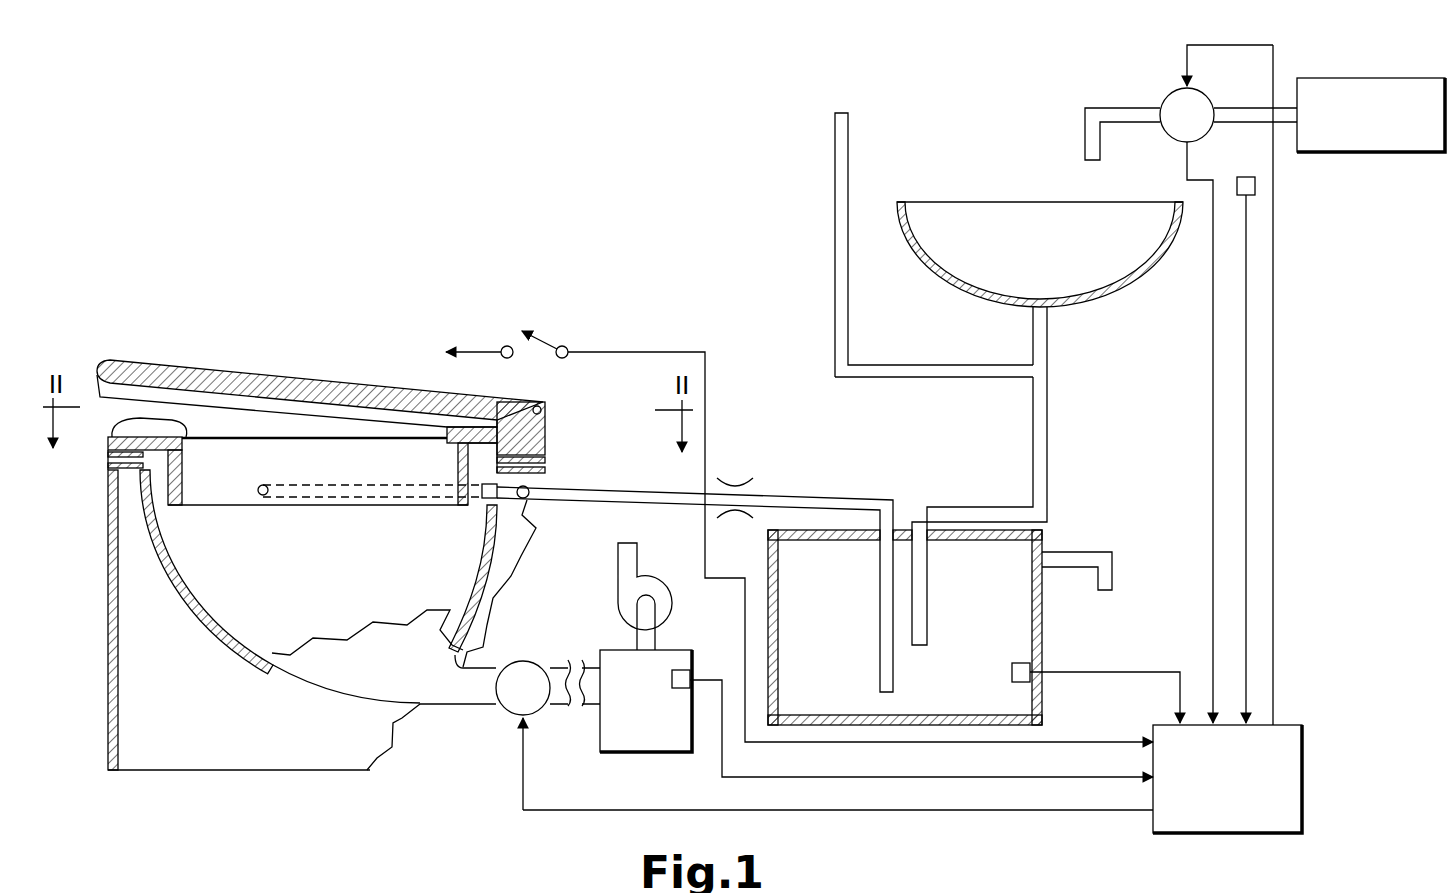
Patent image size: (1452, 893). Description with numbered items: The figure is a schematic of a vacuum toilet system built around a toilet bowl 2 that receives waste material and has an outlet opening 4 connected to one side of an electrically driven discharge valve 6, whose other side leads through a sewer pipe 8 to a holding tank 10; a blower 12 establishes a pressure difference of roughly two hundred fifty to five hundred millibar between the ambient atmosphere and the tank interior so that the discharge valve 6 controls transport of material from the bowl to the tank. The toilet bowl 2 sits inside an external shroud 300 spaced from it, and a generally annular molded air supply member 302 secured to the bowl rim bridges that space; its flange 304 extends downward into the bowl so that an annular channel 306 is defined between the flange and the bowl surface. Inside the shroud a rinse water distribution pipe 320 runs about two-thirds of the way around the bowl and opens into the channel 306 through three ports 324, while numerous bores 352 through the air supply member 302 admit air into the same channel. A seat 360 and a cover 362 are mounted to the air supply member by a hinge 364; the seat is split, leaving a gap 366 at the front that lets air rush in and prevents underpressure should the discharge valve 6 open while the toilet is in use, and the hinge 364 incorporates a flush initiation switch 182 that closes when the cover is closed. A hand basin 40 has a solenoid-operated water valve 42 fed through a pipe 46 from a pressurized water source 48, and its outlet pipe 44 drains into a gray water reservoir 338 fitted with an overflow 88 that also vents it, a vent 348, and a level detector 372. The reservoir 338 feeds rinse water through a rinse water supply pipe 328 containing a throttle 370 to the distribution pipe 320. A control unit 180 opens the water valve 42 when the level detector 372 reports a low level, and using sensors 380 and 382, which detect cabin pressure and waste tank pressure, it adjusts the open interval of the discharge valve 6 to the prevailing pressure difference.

The toilet bowl 2 is at (217, 617).
The outlet opening 4 is at (467, 688).
The discharge valve 6 is at (525, 661).
The sewer pipe 8 is at (555, 707).
The holding tank 10 is at (615, 755).
The blower 12 is at (618, 597).
The hand basin 40 is at (1127, 280).
The water valve 42 is at (1167, 92).
The outlet pipe 44 is at (1048, 352).
The pipe 46 is at (1240, 105).
The source of water under pressure 48 is at (1393, 78).
The overflow 88 is at (1112, 570).
The control unit 180 is at (1255, 797).
The flush initiation switch 182 is at (545, 340).
The external shroud 300 is at (267, 737).
The air supply member 302 is at (548, 445).
The flange 304 is at (457, 506).
The annular channel 306 is at (160, 487).
The rinse water distribution pipe 320 is at (346, 500).
The ports 324 is at (253, 490).
The rinse water supply pipe 328 is at (857, 493).
The gray water reservoir 338 is at (1042, 630).
The vent 348 is at (850, 330).
The bores 352 is at (108, 458).
The seat 360 is at (355, 410).
The cover 362 is at (265, 370).
The hinge 364 is at (540, 407).
The gap 366 is at (143, 428).
The throttle 370 is at (733, 487).
The level detector 372 is at (1012, 672).
The sensor 380 is at (1255, 188).
The sensor 382 is at (677, 670).